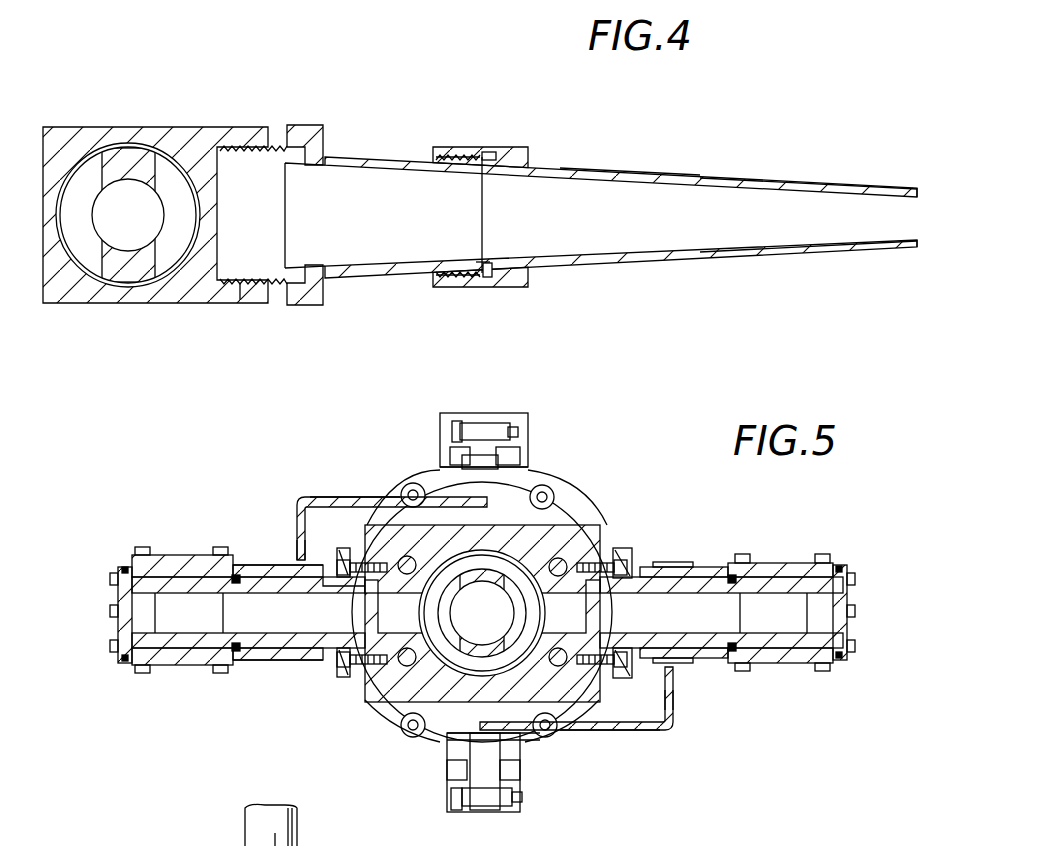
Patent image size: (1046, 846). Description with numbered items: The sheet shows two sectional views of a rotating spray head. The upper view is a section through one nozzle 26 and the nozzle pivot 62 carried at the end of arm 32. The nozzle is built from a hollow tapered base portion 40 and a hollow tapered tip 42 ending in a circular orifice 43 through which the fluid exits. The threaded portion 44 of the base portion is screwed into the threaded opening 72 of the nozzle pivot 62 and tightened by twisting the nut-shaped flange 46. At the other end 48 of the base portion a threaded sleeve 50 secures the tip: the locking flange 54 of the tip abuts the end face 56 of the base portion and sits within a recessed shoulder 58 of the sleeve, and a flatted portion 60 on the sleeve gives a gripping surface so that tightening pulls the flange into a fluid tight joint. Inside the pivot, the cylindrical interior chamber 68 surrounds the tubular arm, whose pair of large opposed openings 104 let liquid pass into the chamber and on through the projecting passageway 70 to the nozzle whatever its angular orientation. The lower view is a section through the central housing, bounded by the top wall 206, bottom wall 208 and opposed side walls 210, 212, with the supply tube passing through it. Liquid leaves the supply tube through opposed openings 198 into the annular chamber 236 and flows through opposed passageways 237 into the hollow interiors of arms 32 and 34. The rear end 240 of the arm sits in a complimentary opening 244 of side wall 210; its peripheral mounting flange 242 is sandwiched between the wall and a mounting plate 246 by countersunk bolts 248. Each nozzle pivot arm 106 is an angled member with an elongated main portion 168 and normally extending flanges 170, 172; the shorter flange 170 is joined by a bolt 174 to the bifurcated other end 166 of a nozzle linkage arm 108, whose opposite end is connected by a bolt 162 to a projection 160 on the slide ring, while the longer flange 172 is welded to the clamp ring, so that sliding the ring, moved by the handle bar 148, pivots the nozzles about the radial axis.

In FIG. 4, the nozzle 26 is at (598, 176).
In FIG. 5, the arm 32 is at (173, 636).
In FIG. 5, the arm 34 is at (787, 642).
In FIG. 4, the base portion 40 is at (350, 160).
In FIG. 4, the tip 42 is at (683, 182).
In FIG. 4, the circular orifice 43 is at (915, 232).
In FIG. 4, the threaded portion 44 is at (232, 148).
In FIG. 4, the nut-shaped flange 46 is at (310, 127).
In FIG. 4, the other end of base portion 48 is at (444, 152).
In FIG. 4, the threaded sleeve 50 is at (510, 147).
In FIG. 4, the locking flange 54 is at (488, 265).
In FIG. 4, the end face 56 is at (480, 265).
In FIG. 4, the recessed shoulder 58 is at (492, 278).
In FIG. 4, the flatted portion 60 is at (472, 157).
In FIG. 4, the nozzle pivot 62 is at (135, 129).
In FIG. 4, the interior chamber 68 is at (111, 146).
In FIG. 4, the projecting passageway 70 is at (180, 152).
In FIG. 4, the threaded opening 72 is at (247, 297).
In FIG. 4, the opposed openings 104 is at (97, 248).
In FIG. 5, the opposed openings 104 is at (787, 600).
In FIG. 5, the nozzle pivot arm 106 is at (340, 496).
In FIG. 5, the nozzle linkage arm 108 is at (528, 445).
In FIG. 5, the handle bar 148 is at (245, 838).
In FIG. 5, the projections 160 is at (477, 422).
In FIG. 5, the bolt 162 is at (515, 428).
In FIG. 5, the other end of linkage arm 166 is at (492, 430).
In FIG. 5, the elongated main portion 168 is at (303, 498).
In FIG. 5, the flange 170 is at (540, 497).
In FIG. 5, the flange 172 is at (297, 520).
In FIG. 5, the bolt 174 is at (522, 467).
In FIG. 5, the opposed openings 198 is at (453, 588).
In FIG. 5, the top wall 206 is at (553, 497).
In FIG. 5, the bottom wall 208 is at (440, 690).
In FIG. 5, the side wall 210 is at (398, 598).
In FIG. 5, the side wall 212 is at (603, 547).
In FIG. 5, the annular chamber 236 is at (532, 620).
In FIG. 5, the opposed passageways 237 is at (405, 555).
In FIG. 5, the rear end of tubular arm 240 is at (370, 640).
In FIG. 5, the peripheral mounting flange 242 is at (348, 662).
In FIG. 5, the complimentary opening 244 is at (377, 662).
In FIG. 5, the mounting plate 246 is at (335, 560).
In FIG. 5, the countersunk bolts 248 is at (348, 575).